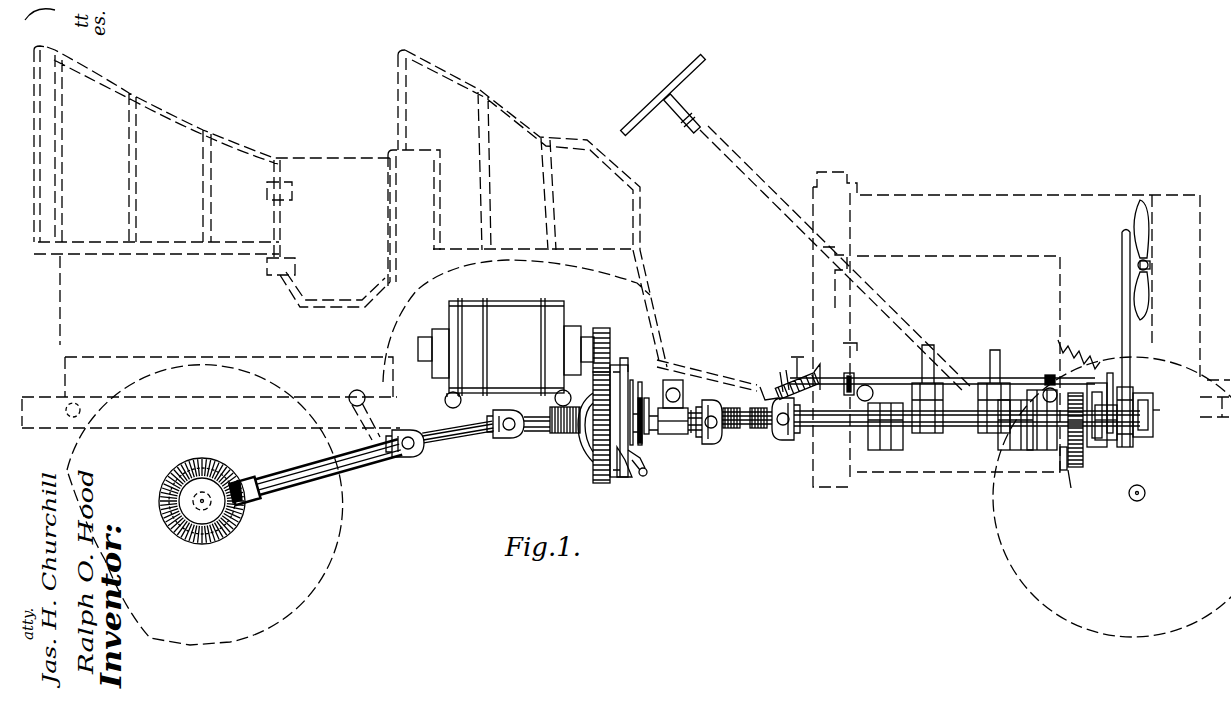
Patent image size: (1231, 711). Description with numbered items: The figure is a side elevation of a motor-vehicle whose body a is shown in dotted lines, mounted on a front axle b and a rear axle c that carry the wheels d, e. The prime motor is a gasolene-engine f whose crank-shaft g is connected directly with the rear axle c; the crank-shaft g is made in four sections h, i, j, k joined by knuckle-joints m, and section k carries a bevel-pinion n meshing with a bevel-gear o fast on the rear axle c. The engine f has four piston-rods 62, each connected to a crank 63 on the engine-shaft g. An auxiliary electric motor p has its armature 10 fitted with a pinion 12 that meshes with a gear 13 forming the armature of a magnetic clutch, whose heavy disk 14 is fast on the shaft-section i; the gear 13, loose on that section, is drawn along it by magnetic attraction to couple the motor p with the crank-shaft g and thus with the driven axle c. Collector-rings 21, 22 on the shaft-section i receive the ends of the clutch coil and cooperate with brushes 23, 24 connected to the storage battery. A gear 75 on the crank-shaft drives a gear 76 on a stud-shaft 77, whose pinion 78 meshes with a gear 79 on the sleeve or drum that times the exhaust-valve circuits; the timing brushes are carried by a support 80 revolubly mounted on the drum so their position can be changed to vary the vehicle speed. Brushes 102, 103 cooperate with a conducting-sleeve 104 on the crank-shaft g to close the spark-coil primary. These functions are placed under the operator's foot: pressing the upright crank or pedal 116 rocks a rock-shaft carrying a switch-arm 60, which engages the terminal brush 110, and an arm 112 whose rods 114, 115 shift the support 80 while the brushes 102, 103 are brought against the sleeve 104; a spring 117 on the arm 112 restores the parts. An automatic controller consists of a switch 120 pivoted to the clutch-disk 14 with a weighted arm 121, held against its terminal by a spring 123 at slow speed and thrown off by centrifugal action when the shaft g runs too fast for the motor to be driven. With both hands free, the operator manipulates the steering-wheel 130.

The armature 10 is at (596, 334).
The pinion 12 is at (603, 333).
The gear 13 is at (600, 483).
The clutch disk 14 is at (617, 372).
The collector-ring 21 is at (649, 400).
The collector-ring 22 is at (642, 437).
The brush 23 is at (631, 380).
The brush 24 is at (641, 382).
The switch-arm 60 is at (856, 374).
The piston-rod 62 is at (922, 362).
The crank 63 is at (905, 446).
The gear 75 is at (1050, 388).
The gear 76 is at (1073, 488).
The stud-shaft 77 is at (1063, 470).
The pinion 78 is at (1083, 462).
The gear 79 is at (1090, 392).
The brush support 80 is at (1100, 447).
The brush 102 is at (1165, 413).
The brush 103 is at (1153, 401).
The conducting-sleeve 104 is at (1150, 393).
The terminal brush 110 is at (846, 385).
The arm 112 is at (1108, 385).
The rod 114 is at (1130, 392).
The rod 115 is at (1132, 447).
The pedal 116 is at (797, 356).
The spring 117 is at (1070, 347).
The switch 120 is at (624, 470).
The weighted arm 121 is at (637, 468).
The spring 123 is at (646, 463).
The steering-wheel 130 is at (699, 99).
The vehicle-body a is at (60, 318).
The front axle b is at (1128, 498).
The rear axle c is at (203, 508).
The wheel d is at (1002, 567).
The wheel e is at (330, 566).
The gasolene-engine f is at (843, 343).
The crank-shaft g is at (836, 428).
The shaft-section h is at (755, 430).
The shaft-section i is at (672, 434).
The shaft-section j is at (468, 440).
The shaft-section k is at (365, 472).
The knuckle-joint m is at (415, 460).
The bevel-pinion n is at (245, 478).
The bevel-gear o is at (229, 527).
The electric motor p is at (515, 300).